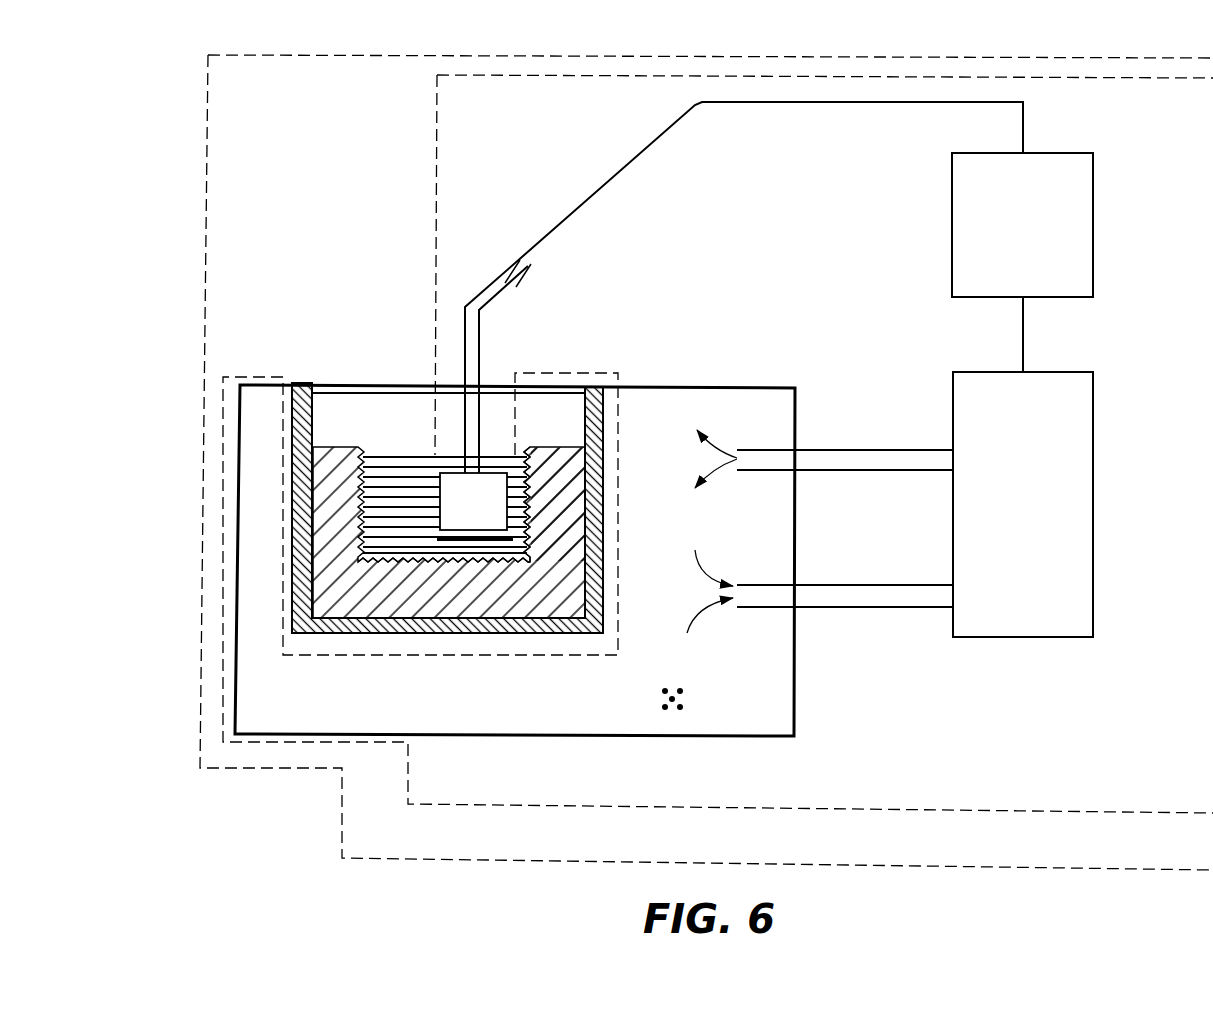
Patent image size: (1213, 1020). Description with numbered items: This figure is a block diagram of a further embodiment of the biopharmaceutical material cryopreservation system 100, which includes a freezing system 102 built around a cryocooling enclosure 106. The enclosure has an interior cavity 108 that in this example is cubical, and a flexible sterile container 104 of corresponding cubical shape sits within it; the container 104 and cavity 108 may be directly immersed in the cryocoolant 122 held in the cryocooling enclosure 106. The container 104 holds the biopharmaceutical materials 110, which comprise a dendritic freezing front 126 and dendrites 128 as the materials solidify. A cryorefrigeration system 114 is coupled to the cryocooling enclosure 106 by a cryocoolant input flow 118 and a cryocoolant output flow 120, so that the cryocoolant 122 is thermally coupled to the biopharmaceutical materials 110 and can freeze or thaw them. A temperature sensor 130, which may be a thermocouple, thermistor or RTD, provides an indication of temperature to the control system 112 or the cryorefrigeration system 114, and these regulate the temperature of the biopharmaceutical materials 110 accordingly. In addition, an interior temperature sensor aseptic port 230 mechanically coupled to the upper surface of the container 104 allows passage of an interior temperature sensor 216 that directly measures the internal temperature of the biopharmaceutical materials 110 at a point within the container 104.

The biopharmaceutical material cryopreservation system 100 is at (218, 807).
The freezing system 102 is at (328, 772).
The flexible sterile container 104 is at (300, 600).
The cryocooling enclosure 106 is at (578, 738).
The interior cavity 108 is at (292, 415).
The biopharmaceutical materials 110 is at (386, 504).
The control system 112 is at (1099, 207).
The cryorefrigeration system 114 is at (1099, 505).
The cryocoolant input flow 118 is at (862, 446).
The cryocoolant output flow 120 is at (888, 613).
The cryocoolant 122 is at (690, 697).
The dendritic freezing front 126 is at (560, 507).
The dendrites 128 is at (539, 472).
The temperature sensor 130 is at (543, 538).
The interior temperature sensor 216 is at (473, 543).
The interior temperature sensor aseptic port 230 is at (486, 346).